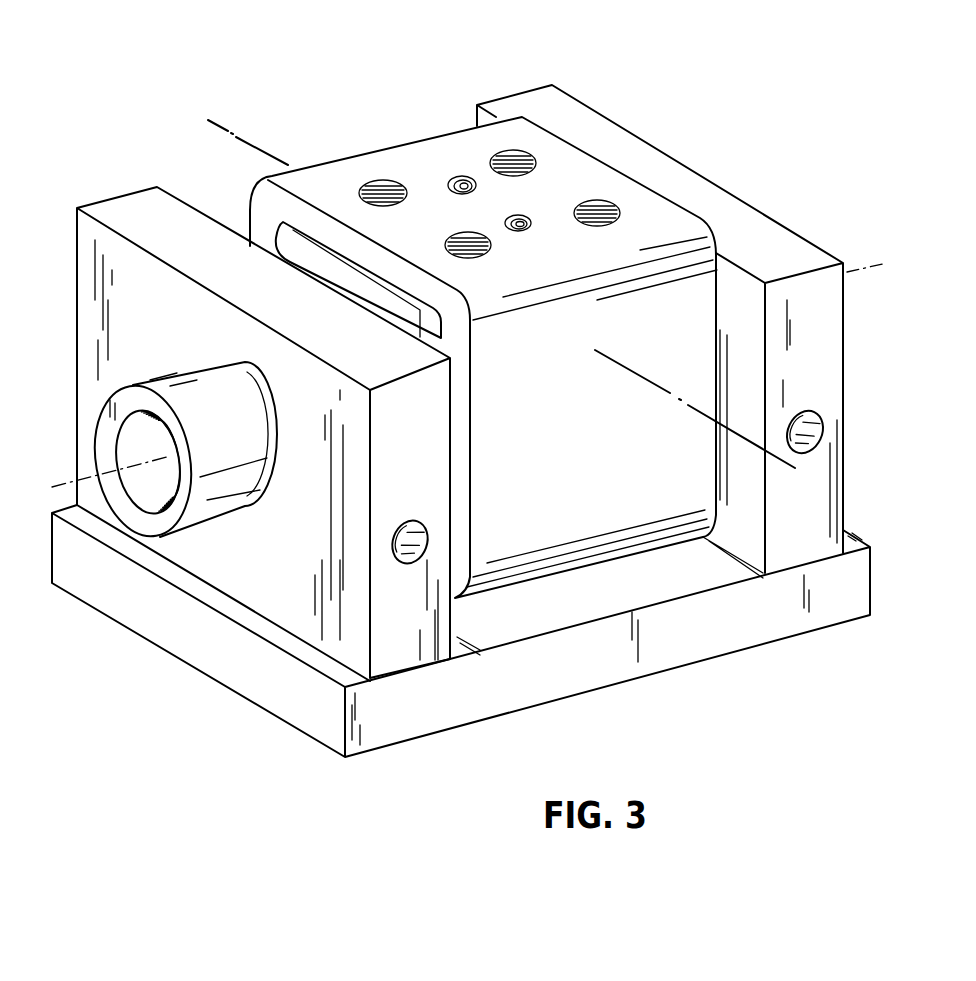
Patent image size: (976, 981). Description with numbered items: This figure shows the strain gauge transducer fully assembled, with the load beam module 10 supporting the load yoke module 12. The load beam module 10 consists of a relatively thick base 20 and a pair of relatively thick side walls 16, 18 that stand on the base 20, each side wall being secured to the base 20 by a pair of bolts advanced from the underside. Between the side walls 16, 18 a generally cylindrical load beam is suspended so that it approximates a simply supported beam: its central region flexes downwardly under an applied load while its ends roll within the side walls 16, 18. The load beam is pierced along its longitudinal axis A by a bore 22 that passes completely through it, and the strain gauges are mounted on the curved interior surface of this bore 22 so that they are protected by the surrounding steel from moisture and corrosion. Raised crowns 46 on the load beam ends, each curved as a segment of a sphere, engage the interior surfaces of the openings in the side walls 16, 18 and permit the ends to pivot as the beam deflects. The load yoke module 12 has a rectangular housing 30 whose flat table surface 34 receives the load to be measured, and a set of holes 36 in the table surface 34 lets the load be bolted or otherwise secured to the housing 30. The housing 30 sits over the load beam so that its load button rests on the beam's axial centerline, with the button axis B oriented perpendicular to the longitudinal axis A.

The load beam module 10 is at (748, 145).
The load yoke module 12 is at (373, 143).
The side wall 16 is at (633, 132).
The side wall 18 is at (77, 207).
The base 20 is at (686, 648).
The bore 22 is at (143, 452).
The rectangular housing 30 is at (598, 57).
The table surface 34 is at (450, 231).
The holes 36 is at (578, 220).
The raised crown 46 is at (233, 385).